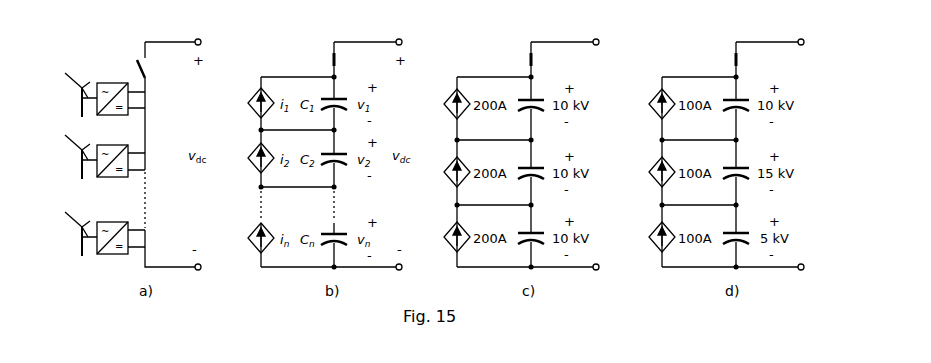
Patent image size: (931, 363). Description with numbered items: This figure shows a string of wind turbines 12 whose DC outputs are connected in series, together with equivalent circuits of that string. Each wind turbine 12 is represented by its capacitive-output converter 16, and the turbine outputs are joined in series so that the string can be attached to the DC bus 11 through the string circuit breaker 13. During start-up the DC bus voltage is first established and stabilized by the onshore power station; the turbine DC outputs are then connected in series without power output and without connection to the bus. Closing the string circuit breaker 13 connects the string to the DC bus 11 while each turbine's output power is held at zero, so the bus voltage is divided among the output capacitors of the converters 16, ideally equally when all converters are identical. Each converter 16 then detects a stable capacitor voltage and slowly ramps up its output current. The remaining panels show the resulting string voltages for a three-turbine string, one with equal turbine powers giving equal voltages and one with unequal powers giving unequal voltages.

The DC bus 11 is at (201, 44).
The wind turbine 12 is at (82, 117).
The string circuit breaker 13 is at (147, 65).
The converter 16 is at (110, 83).